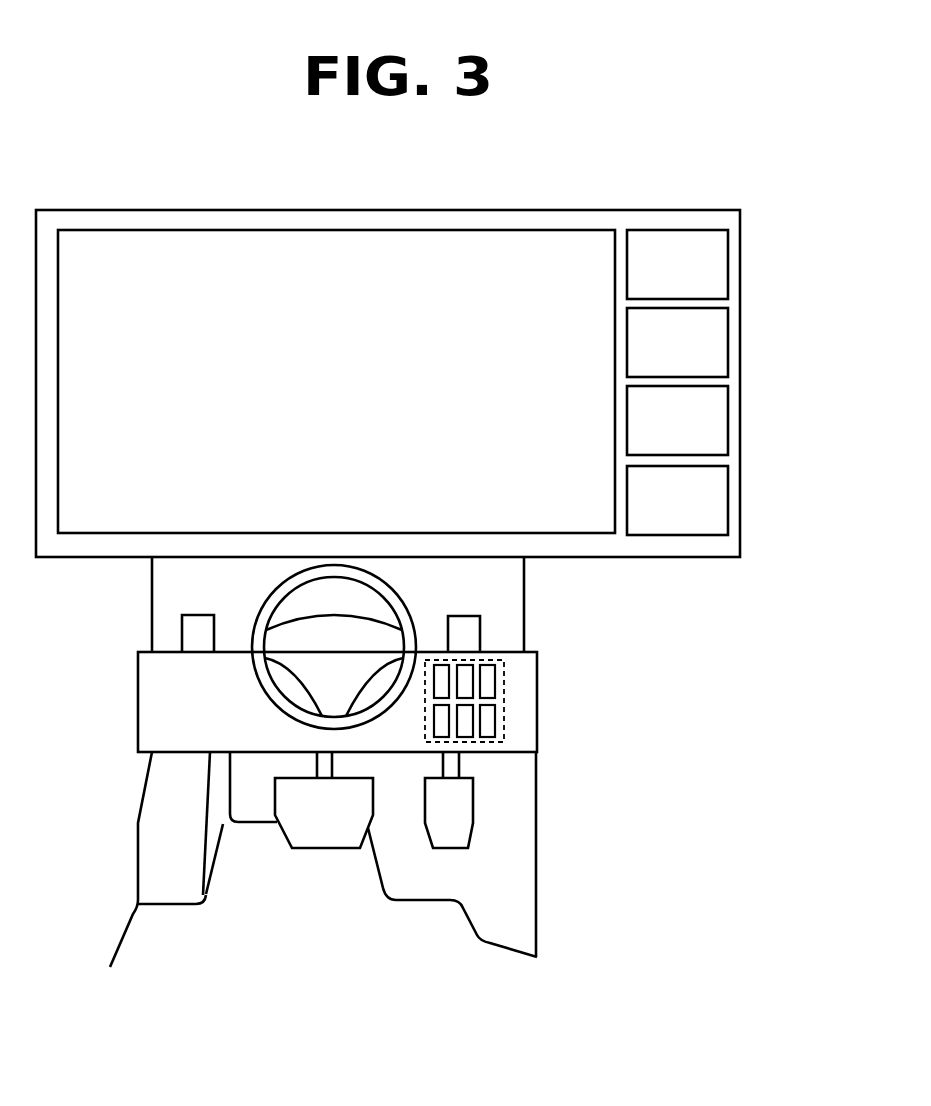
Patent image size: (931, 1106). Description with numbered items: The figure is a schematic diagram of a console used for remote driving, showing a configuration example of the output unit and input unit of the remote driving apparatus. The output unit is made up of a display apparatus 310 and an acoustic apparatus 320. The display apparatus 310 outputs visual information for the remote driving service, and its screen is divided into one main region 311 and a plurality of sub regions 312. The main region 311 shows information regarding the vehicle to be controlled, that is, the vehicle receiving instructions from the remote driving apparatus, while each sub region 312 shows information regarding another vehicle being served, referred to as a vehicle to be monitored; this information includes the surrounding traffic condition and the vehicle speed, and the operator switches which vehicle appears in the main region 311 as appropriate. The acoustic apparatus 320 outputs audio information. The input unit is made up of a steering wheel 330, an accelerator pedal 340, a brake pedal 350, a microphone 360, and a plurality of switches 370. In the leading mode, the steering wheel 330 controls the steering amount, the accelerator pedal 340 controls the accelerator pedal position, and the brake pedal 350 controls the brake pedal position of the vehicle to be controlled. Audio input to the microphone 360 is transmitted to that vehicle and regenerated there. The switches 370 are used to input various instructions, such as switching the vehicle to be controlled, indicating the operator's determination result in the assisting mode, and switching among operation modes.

The display apparatus 310 is at (395, 210).
The main region 311 is at (223, 230).
The sub region 312 is at (728, 273).
The acoustic apparatus 320 is at (463, 635).
The steering wheel 330 is at (258, 672).
The accelerator pedal 340 is at (452, 828).
The brake pedal 350 is at (330, 818).
The microphone 360 is at (198, 635).
The switches 370 is at (504, 693).